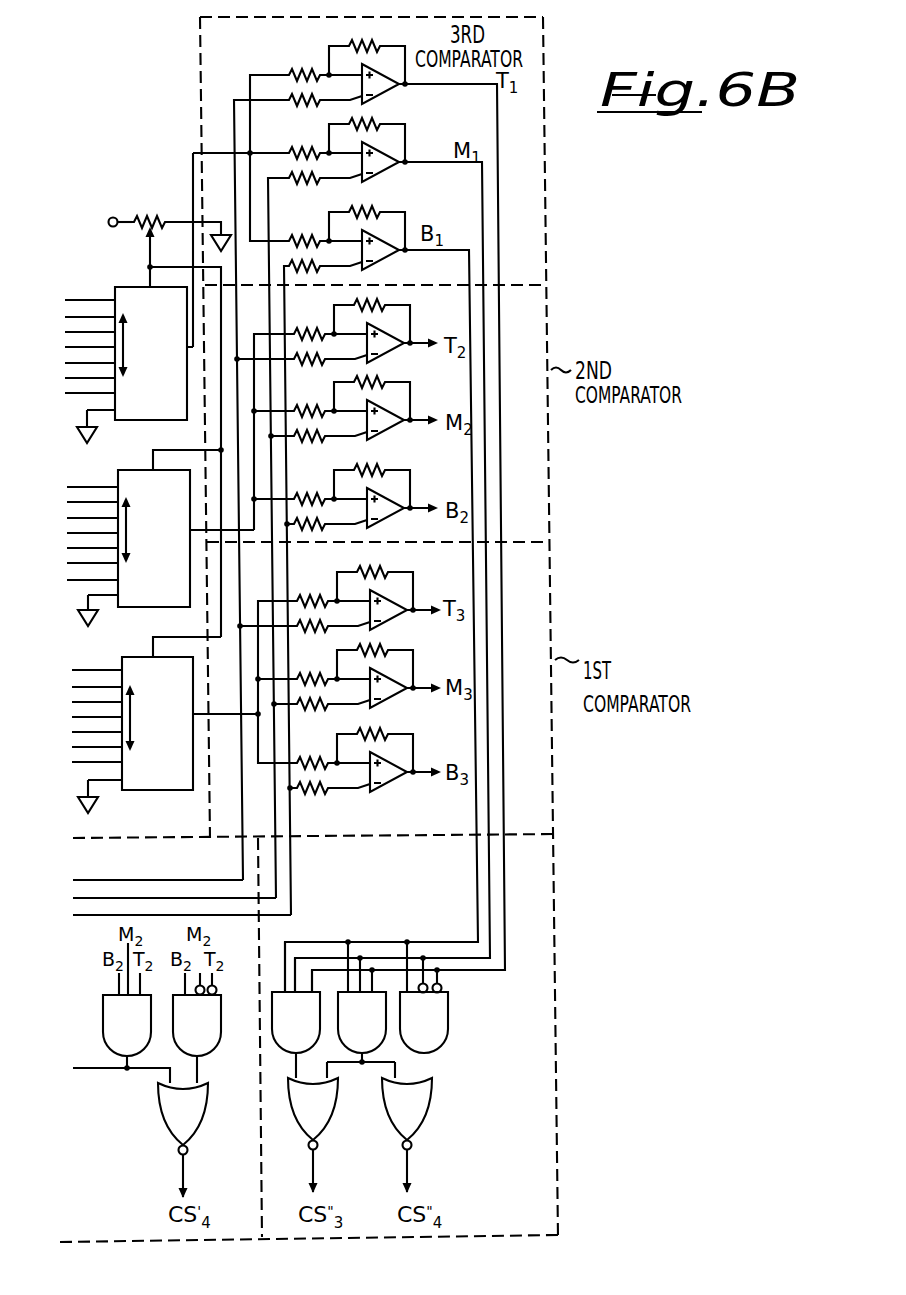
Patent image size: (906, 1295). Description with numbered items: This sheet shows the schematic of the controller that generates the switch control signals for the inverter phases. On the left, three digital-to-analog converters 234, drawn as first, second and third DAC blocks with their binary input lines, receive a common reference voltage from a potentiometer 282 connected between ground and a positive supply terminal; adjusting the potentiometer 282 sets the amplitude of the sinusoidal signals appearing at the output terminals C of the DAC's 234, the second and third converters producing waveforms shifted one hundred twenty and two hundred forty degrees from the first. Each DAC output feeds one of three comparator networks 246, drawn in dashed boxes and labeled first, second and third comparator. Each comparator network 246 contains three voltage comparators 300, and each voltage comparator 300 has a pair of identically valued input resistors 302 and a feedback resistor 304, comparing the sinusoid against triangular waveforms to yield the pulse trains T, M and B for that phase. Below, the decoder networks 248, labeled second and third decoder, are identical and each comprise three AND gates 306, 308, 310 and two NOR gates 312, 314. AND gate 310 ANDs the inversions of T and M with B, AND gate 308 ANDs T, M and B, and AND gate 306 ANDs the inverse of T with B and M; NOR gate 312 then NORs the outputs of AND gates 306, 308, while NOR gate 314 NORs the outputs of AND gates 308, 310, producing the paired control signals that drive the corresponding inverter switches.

The digital-to-analog converter 234 is at (146, 287).
The comparator network 246 is at (545, 829).
The decoder network 248 is at (394, 874).
The potentiometer 282 is at (154, 215).
The voltage comparator 300 is at (405, 435).
The input resistor 302 is at (296, 437).
The feedback resistor 304 is at (377, 381).
The AND gate 306 is at (296, 1022).
The AND gate 308 is at (244, 1024).
The AND gate 310 is at (310, 1024).
The NOR gate 312 is at (313, 1109).
The NOR gate 314 is at (295, 1111).